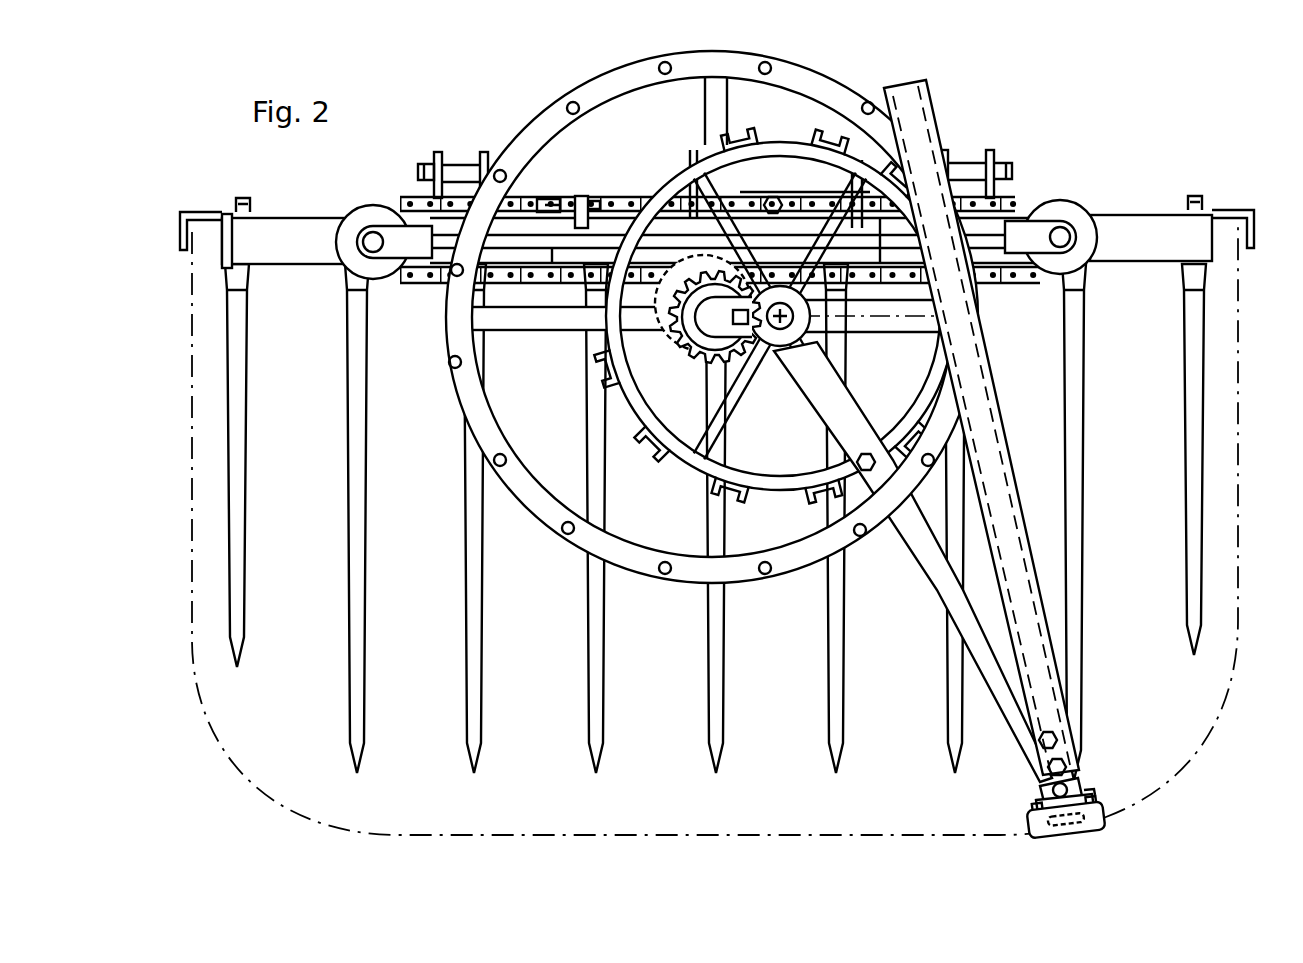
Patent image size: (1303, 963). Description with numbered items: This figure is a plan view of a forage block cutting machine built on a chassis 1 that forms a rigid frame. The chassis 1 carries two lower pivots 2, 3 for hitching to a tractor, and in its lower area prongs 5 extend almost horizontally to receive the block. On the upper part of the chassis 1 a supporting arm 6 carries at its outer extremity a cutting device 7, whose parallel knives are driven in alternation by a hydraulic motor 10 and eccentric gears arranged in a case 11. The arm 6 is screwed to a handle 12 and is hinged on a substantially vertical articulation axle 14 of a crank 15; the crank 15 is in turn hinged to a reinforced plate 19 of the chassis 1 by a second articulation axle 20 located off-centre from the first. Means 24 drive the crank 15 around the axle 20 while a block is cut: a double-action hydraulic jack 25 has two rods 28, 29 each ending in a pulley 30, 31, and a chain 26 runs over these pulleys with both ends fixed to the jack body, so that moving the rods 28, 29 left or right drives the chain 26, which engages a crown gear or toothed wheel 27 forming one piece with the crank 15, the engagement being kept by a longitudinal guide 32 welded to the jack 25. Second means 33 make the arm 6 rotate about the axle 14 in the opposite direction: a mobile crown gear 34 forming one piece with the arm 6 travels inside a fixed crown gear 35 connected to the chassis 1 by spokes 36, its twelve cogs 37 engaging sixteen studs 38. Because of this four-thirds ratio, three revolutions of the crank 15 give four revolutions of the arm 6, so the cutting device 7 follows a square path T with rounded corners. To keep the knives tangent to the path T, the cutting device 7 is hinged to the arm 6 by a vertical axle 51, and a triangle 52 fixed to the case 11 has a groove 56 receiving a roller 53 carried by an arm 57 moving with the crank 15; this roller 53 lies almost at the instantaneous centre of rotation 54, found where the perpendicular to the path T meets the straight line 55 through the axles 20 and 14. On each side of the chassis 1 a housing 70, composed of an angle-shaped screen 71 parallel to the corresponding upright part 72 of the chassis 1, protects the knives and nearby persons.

The chassis 1 is at (293, 258).
The lower pivot 2 is at (462, 176).
The lower pivot 3 is at (975, 164).
The prongs 5 is at (468, 630).
The supporting arm 6 is at (945, 606).
The cutting device 7 is at (1030, 820).
The hydraulic motor 10 is at (1072, 796).
The case 11 is at (1094, 806).
The handle 12 is at (815, 428).
The articulation axle 14 is at (777, 348).
The crank 15 is at (706, 332).
The reinforced plate 19 is at (660, 294).
The articulation axle 20 is at (688, 342).
The means for driving the crank 24 is at (757, 272).
The double-action hydraulic jack 25 is at (600, 230).
The chain 26 is at (440, 282).
The crown gear or toothed wheel 27 is at (690, 292).
The rod 28 is at (440, 235).
The rod 29 is at (1000, 232).
The pulley 30 is at (360, 222).
The pulley 31 is at (1073, 226).
The longitudinal guide 32 is at (575, 280).
The means for rotating the supporting arm 33 is at (695, 344).
The mobile crown gear 34 is at (794, 334).
The fixed crown gear 35 is at (540, 505).
The spokes 36 is at (490, 322).
The cogs 37 is at (633, 440).
The studs 38 is at (493, 462).
The substantially vertical axle 51 is at (1042, 790).
The triangle 52 is at (1012, 427).
The roller 53 is at (972, 332).
The instantaneous centre of rotation 54 is at (968, 320).
The straight line 55 is at (872, 320).
The groove 56 is at (990, 400).
The arm 57 is at (925, 332).
The housing 70 is at (205, 243).
The screen 71 is at (184, 212).
The upright part 72 is at (227, 214).
The path T is at (1207, 735).